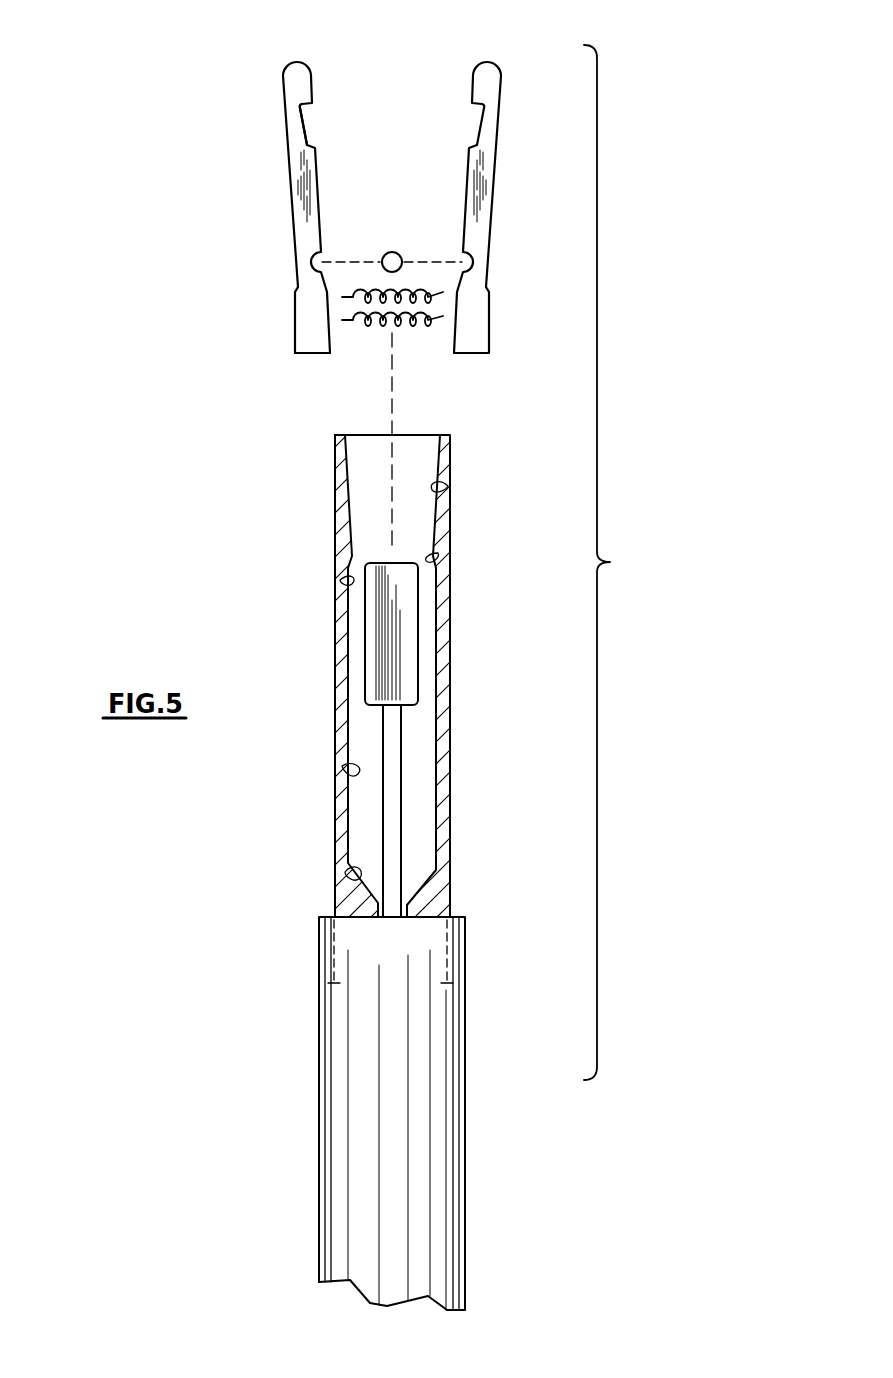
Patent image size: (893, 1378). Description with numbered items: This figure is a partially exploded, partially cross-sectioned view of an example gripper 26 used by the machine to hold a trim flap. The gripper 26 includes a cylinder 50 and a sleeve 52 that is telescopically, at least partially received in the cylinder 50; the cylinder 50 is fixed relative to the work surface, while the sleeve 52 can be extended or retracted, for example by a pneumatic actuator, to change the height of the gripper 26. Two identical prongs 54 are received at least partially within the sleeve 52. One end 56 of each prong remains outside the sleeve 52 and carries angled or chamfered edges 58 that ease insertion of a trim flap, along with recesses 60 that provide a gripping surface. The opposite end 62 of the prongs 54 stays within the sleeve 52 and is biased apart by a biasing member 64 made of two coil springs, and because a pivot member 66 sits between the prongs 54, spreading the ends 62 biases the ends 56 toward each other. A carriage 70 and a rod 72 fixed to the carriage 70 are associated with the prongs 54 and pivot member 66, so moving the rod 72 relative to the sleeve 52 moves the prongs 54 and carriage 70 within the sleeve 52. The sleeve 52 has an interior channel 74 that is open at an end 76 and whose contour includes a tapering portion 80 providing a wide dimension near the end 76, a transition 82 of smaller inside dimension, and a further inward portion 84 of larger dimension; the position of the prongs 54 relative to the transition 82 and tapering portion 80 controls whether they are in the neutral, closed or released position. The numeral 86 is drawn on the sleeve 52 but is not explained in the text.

The gripper 26 is at (620, 559).
The cylinder 50 is at (320, 1067).
The sleeve 52 is at (335, 688).
The prongs 54 is at (298, 197).
The end of the prongs 56 is at (291, 52).
The angled or chamfered edges 58 is at (478, 68).
The recesses 60 is at (303, 108).
The opposite end of the prongs 62 is at (308, 368).
The biasing member 64 is at (432, 289).
The pivot member 66 is at (385, 254).
The carriage 70 is at (405, 627).
The rod 72 is at (395, 820).
The interior channel 74 is at (342, 766).
The end of the sleeve 76 is at (340, 436).
The tapering portion 80 is at (448, 486).
The transition 82 is at (438, 553).
The portion 84 is at (340, 580).
The opening 86 is at (345, 872).